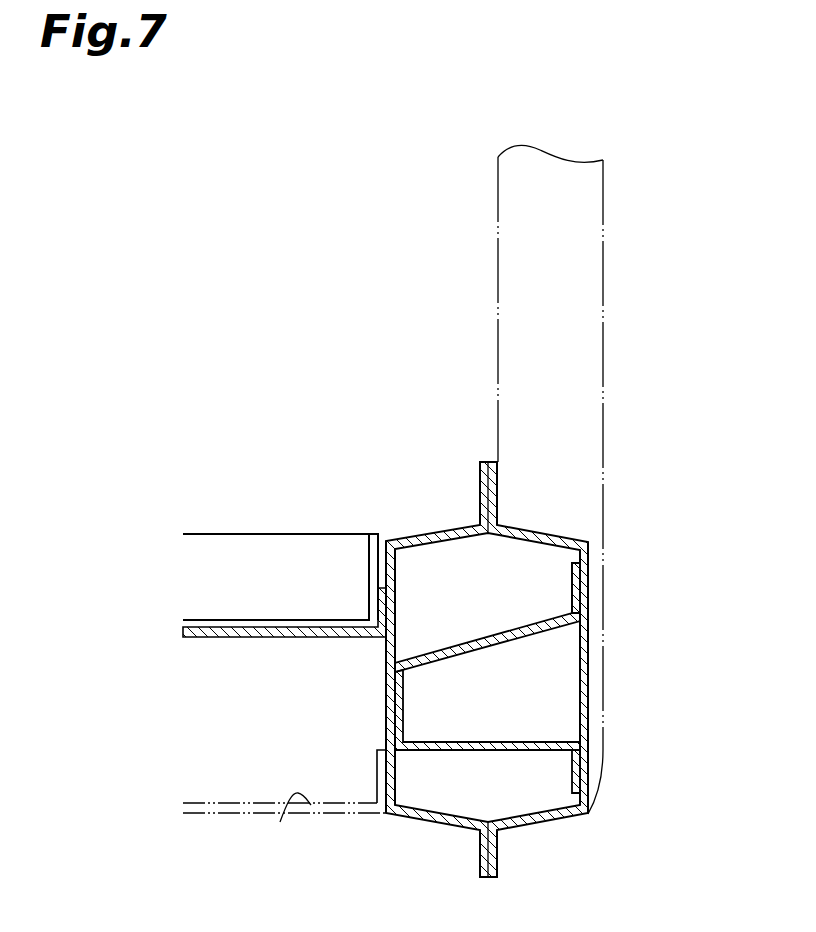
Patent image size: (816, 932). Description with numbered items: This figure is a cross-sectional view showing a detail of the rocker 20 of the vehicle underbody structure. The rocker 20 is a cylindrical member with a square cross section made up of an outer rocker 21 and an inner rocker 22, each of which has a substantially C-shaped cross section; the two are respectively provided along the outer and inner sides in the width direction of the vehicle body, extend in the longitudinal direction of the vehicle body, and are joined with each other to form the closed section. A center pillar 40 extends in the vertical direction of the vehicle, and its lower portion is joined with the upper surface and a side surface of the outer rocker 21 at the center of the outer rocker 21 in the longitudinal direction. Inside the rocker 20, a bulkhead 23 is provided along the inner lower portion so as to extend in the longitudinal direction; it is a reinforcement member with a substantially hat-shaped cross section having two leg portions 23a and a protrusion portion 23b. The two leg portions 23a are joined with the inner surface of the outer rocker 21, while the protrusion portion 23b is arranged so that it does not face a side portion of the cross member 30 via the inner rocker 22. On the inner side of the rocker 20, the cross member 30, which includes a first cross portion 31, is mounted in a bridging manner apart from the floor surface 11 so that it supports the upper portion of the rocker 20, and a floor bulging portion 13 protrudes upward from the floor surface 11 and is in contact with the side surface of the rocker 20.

The floor surface 11 is at (283, 818).
The floor bulging portion 13 is at (300, 637).
The rocker 20 is at (501, 645).
The outer rocker 21 is at (537, 530).
The inner rocker 22 is at (438, 822).
The bulkhead 23 is at (485, 648).
The leg portion 23a is at (574, 588).
The protrusion portion 23b is at (394, 708).
The cross member 30 is at (284, 563).
The first cross portion 31 is at (255, 533).
The center pillar 40 is at (603, 463).